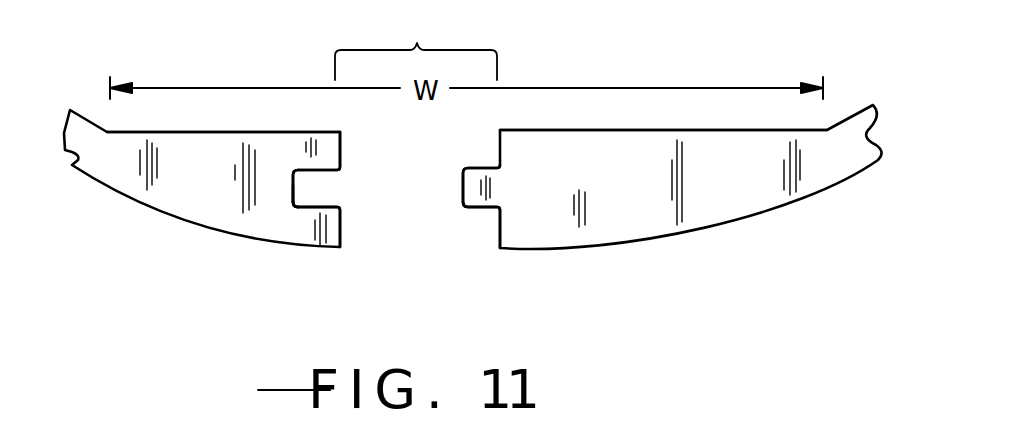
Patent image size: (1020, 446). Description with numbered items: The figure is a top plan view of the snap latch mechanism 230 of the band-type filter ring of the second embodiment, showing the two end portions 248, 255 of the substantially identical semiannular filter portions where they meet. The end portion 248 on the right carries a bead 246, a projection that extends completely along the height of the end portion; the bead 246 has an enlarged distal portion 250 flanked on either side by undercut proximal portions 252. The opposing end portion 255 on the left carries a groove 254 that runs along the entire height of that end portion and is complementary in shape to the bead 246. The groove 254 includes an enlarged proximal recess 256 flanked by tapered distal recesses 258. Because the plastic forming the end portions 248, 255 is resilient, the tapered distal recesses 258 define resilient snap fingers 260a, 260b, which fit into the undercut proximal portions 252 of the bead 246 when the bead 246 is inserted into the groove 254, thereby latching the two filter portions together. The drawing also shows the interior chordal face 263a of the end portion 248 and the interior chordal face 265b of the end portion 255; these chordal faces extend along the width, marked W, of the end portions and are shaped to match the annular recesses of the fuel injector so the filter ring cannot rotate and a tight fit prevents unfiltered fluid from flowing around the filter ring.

The snap latch mechanism 230 is at (416, 43).
The bead 246 is at (473, 210).
The end portion 248 is at (725, 207).
The enlarged distal portion 250 is at (497, 193).
The undercut proximal portions 252 is at (497, 170).
The groove 254 is at (307, 195).
The end portion 255 is at (190, 190).
The enlarged proximal recess 256 is at (293, 177).
The tapered distal recesses 258 is at (327, 190).
The resilient snap finger 260a is at (316, 226).
The resilient snap finger 260b is at (323, 147).
The interior chordal face 263a is at (692, 130).
The interior chordal face 265b is at (197, 132).